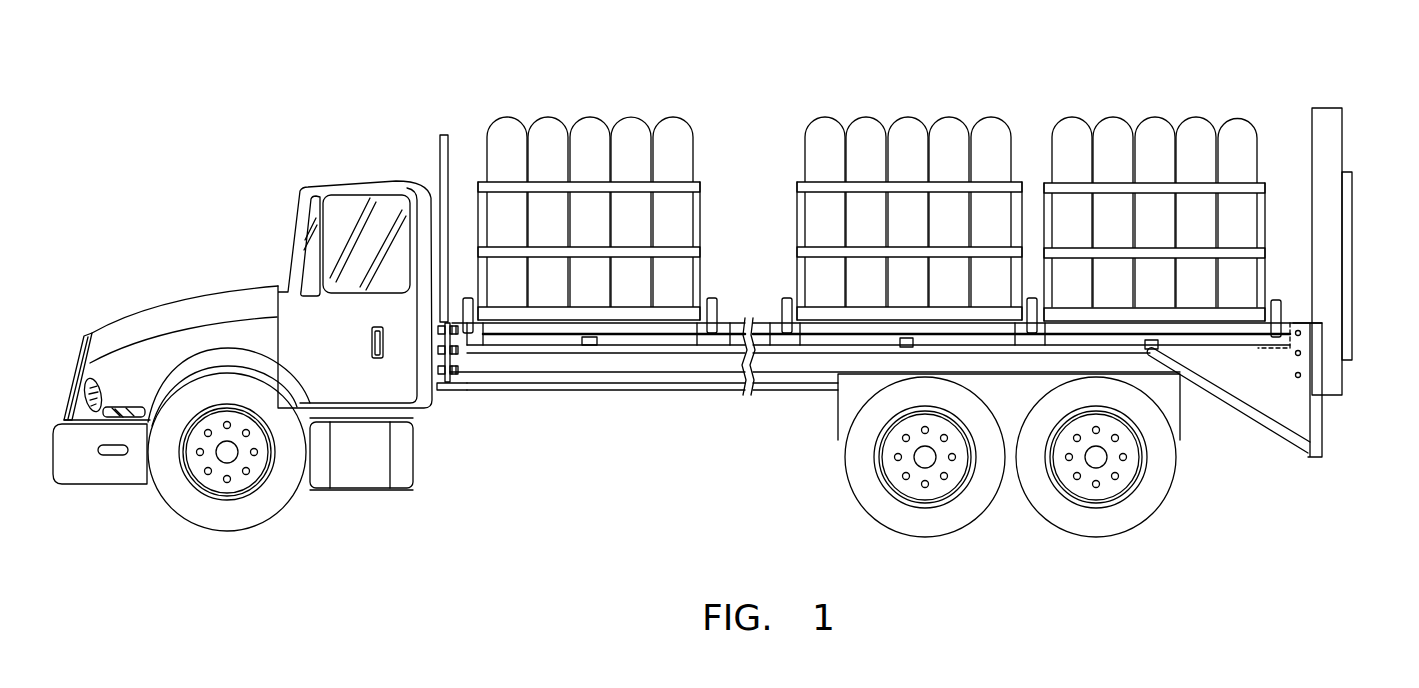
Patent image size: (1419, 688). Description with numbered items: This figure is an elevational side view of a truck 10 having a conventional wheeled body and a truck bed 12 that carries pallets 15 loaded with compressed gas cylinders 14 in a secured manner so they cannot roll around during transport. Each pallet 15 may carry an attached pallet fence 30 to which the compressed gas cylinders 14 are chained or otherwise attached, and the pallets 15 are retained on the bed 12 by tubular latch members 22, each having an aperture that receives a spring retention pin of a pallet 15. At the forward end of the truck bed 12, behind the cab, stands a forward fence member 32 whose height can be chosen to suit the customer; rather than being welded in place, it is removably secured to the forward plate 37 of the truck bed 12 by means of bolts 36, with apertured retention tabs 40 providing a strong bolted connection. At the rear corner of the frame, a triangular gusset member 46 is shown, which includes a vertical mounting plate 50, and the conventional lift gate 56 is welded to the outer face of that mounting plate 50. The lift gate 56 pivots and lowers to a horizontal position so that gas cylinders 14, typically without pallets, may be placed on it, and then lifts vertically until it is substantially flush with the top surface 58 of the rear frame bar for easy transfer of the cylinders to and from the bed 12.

The truck 10 is at (202, 292).
The truck bed 12 is at (706, 392).
The compressed gas cylinders 14 is at (547, 145).
The pallets 15 is at (548, 313).
The tubular latch members 22 is at (785, 303).
The pallet fence 30 is at (668, 188).
The forward fence member 32 is at (437, 158).
The bolts 36 is at (458, 375).
The forward plate 37 is at (440, 382).
The apertured retention tabs 40 is at (437, 392).
The triangular gusset member 46 is at (1255, 380).
The vertical mounting plate 50 is at (1307, 398).
The lift gate 56 is at (1327, 157).
The top surface 58 is at (1288, 323).